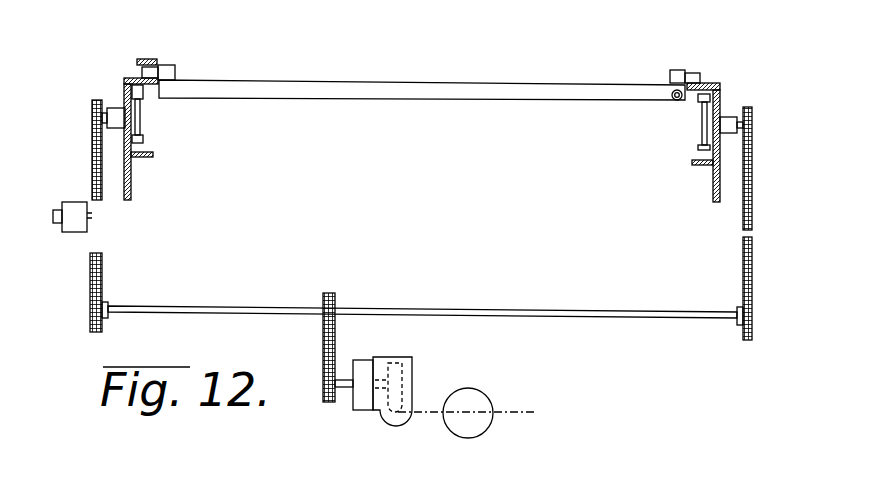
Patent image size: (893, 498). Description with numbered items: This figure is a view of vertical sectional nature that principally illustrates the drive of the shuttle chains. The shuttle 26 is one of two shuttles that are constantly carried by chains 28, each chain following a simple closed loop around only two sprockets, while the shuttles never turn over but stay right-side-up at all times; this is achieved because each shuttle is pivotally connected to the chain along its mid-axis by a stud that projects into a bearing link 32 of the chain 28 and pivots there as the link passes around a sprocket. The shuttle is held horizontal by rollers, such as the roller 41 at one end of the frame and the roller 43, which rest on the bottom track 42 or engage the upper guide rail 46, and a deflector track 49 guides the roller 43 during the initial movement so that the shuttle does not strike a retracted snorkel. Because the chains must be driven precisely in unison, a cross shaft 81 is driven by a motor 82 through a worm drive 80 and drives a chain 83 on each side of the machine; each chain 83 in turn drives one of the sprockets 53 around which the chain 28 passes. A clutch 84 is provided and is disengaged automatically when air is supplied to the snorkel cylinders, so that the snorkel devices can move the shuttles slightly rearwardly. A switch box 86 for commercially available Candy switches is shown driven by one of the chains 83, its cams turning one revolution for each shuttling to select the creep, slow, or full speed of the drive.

The shuttle 26 is at (456, 80).
The chain 28 is at (143, 140).
The bearing link 32 is at (127, 88).
The roller 41 is at (158, 92).
The bottom track 42 is at (153, 157).
The roller 43 is at (160, 67).
The upper guide rail 46 is at (137, 80).
The deflector track 49 is at (152, 61).
The sprocket 53 is at (140, 128).
The worm drive 80 is at (393, 423).
The cross shaft 81 is at (525, 313).
The motor 82 is at (485, 413).
The chain 83 is at (92, 272).
The clutch 84 is at (363, 400).
The switch box 86 is at (68, 202).